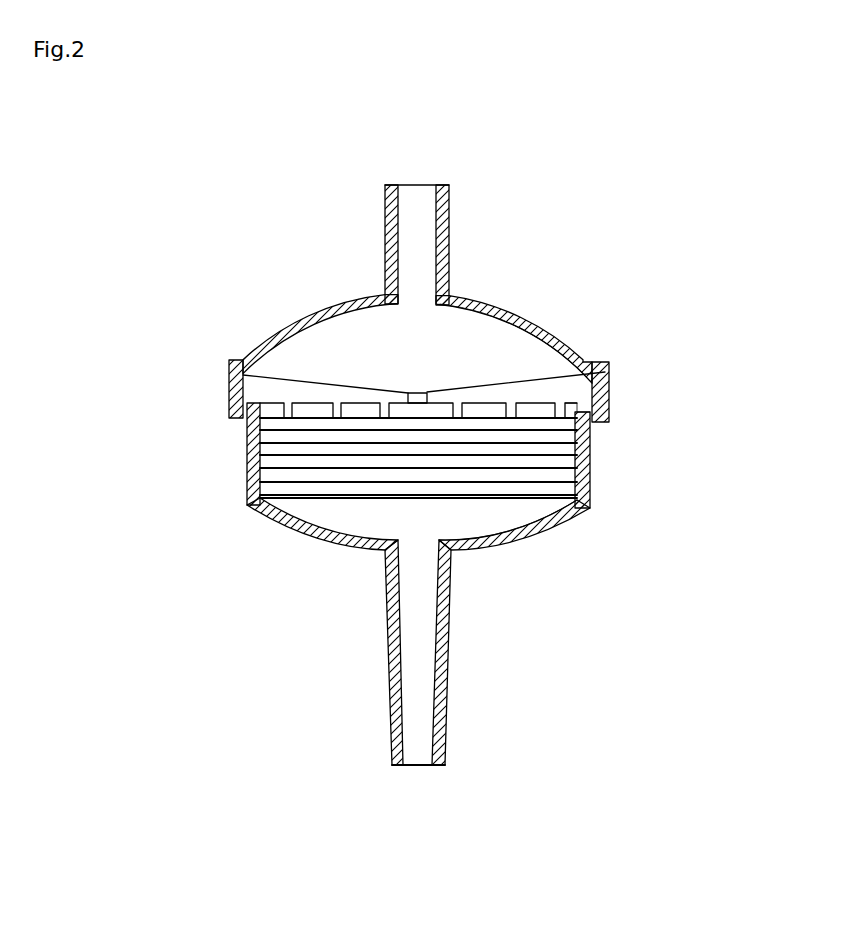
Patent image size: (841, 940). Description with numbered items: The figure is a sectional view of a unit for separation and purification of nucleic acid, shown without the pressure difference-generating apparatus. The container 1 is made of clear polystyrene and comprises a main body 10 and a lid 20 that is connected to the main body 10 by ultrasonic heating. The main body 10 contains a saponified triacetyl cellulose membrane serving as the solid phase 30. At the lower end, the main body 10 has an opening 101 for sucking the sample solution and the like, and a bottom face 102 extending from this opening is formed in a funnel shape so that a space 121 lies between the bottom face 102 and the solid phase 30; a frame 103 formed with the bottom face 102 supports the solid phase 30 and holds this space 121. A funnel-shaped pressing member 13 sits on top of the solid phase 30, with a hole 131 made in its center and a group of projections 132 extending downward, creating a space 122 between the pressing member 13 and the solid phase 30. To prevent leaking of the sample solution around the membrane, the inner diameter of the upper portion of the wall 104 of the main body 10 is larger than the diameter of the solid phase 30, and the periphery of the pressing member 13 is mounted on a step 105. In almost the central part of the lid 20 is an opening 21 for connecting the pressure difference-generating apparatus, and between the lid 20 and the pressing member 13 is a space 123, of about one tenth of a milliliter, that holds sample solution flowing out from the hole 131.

The container 1 is at (512, 172).
The main body 10 is at (248, 465).
The opening 101 is at (420, 768).
The bottom face 102 is at (517, 542).
The frame 103 is at (262, 512).
The wall 104 is at (586, 455).
The step 105 is at (607, 377).
The pressing member 13 is at (547, 393).
The hole 131 is at (418, 392).
The projection 132 is at (600, 412).
The lid 20 is at (278, 332).
The opening 21 is at (410, 184).
The space 121 is at (458, 517).
The space 122 is at (488, 413).
The space 123 is at (472, 327).
The solid phase 30 is at (583, 497).